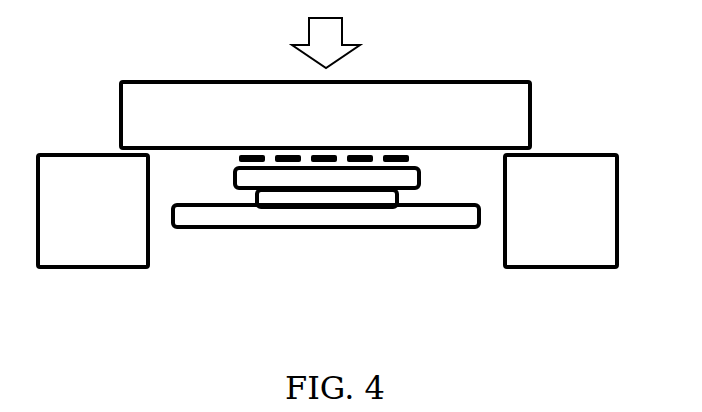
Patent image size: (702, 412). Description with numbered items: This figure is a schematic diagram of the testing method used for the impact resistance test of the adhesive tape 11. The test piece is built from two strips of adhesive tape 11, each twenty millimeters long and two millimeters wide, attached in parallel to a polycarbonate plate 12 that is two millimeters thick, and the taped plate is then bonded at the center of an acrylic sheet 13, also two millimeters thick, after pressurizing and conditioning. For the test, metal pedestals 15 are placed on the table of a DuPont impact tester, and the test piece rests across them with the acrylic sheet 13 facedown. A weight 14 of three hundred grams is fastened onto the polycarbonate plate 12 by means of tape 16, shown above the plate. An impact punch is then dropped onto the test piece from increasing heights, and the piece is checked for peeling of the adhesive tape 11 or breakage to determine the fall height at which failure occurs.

The adhesive tape 11 is at (323, 197).
The polycarbonate plate 12 is at (246, 178).
The acrylic sheet 13 is at (435, 217).
The weight 14 is at (472, 93).
The metal pedestals 15 is at (97, 258).
The tape 16 is at (254, 150).